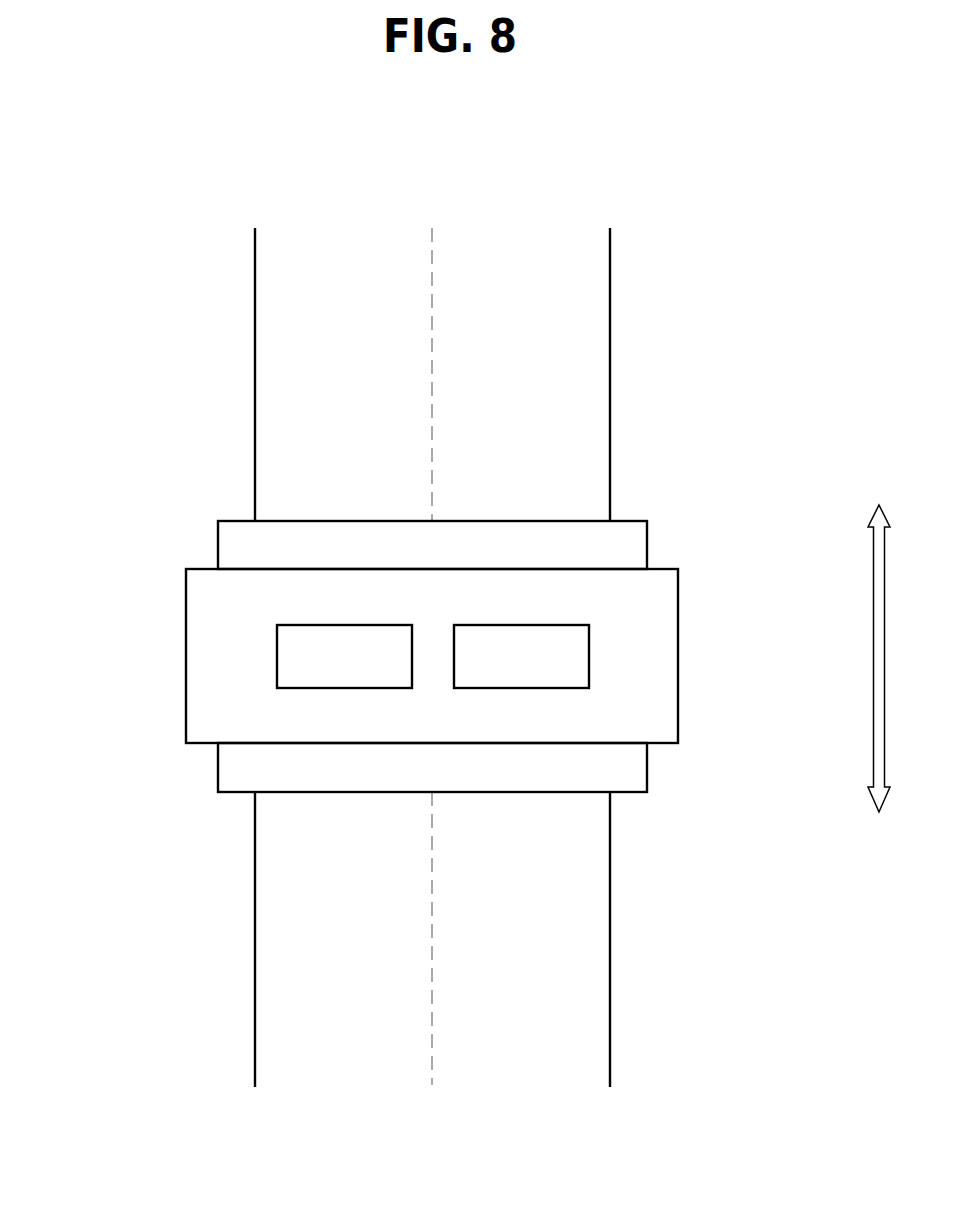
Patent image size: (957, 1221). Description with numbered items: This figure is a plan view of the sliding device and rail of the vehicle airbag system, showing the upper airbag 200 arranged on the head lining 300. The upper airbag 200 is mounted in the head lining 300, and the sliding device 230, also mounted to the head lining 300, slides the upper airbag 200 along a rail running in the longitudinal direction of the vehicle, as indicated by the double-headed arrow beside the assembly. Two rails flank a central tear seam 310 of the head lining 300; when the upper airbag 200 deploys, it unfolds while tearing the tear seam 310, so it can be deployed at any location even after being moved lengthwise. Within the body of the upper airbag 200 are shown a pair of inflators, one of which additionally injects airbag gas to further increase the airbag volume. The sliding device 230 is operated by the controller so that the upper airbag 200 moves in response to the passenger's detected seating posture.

The upper airbag 200 is at (424, 656).
The sliding device 230 is at (647, 550).
The head lining 300 is at (422, 633).
The tear seam 310 is at (433, 258).